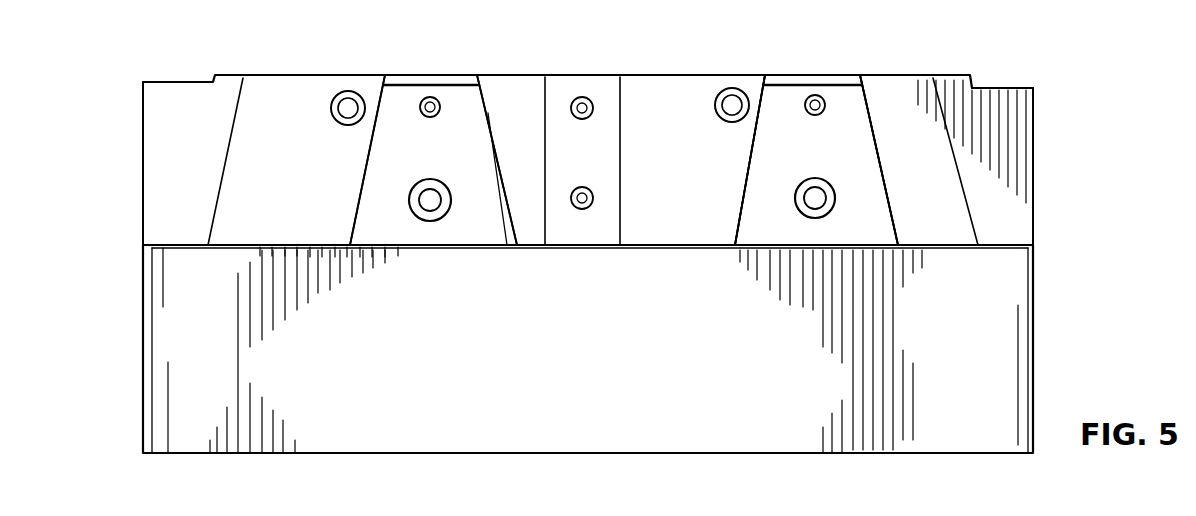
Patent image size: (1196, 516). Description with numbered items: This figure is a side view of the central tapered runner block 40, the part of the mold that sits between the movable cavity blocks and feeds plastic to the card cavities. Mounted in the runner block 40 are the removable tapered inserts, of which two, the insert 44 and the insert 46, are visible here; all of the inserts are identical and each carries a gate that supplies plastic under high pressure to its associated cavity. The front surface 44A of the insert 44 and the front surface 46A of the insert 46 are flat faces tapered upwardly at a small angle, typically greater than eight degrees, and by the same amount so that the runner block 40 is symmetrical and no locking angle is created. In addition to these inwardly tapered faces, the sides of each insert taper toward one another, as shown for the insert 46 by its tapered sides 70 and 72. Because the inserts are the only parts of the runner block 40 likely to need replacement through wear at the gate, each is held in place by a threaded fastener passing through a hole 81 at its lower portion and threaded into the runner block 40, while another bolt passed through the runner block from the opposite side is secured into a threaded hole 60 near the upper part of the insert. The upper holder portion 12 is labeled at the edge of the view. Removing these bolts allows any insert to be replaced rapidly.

The tool holder 12 is at (588, 122).
The runner block 40 is at (192, 329).
The insert 44 is at (305, 0).
The front surface 44A is at (459, 222).
The insert 46 is at (847, 0).
The front surface 46A is at (757, 0).
The threaded hole 60 is at (822, 112).
The tapered side 70 is at (677, 0).
The tapered side 72 is at (885, 192).
The hole 81 is at (813, 212).